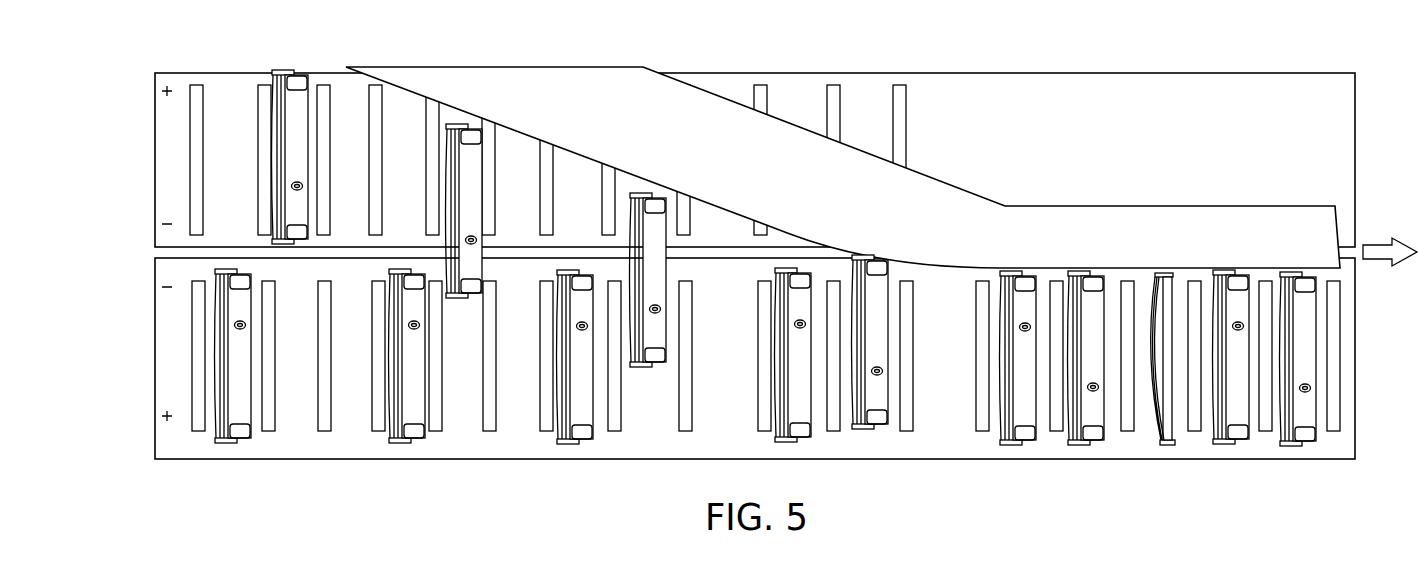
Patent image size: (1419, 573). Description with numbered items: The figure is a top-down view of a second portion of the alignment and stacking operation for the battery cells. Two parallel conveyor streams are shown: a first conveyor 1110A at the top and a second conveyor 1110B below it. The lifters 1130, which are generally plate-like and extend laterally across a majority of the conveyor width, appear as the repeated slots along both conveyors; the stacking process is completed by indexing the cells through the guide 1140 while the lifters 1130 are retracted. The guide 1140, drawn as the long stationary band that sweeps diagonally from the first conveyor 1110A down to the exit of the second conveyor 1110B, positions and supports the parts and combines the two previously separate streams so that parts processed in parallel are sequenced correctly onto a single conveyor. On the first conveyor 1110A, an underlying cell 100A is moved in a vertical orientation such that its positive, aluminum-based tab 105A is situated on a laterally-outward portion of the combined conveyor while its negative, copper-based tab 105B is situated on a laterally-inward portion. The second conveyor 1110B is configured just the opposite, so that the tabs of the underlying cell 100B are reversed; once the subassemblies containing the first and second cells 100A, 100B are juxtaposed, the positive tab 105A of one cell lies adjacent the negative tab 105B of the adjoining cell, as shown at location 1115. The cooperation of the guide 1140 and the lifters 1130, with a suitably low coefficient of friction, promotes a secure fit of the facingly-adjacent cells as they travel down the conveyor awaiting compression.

The cell 100A is at (208, 157).
The cell 100B is at (238, 370).
The positive tab 105A is at (293, 82).
The negative tab 105B is at (288, 235).
The first conveyor 1110A is at (716, 142).
The second conveyor 1110B is at (165, 333).
The lifter 1130 is at (200, 88).
The guide 1140 is at (562, 92).
The location 1115 is at (1115, 462).